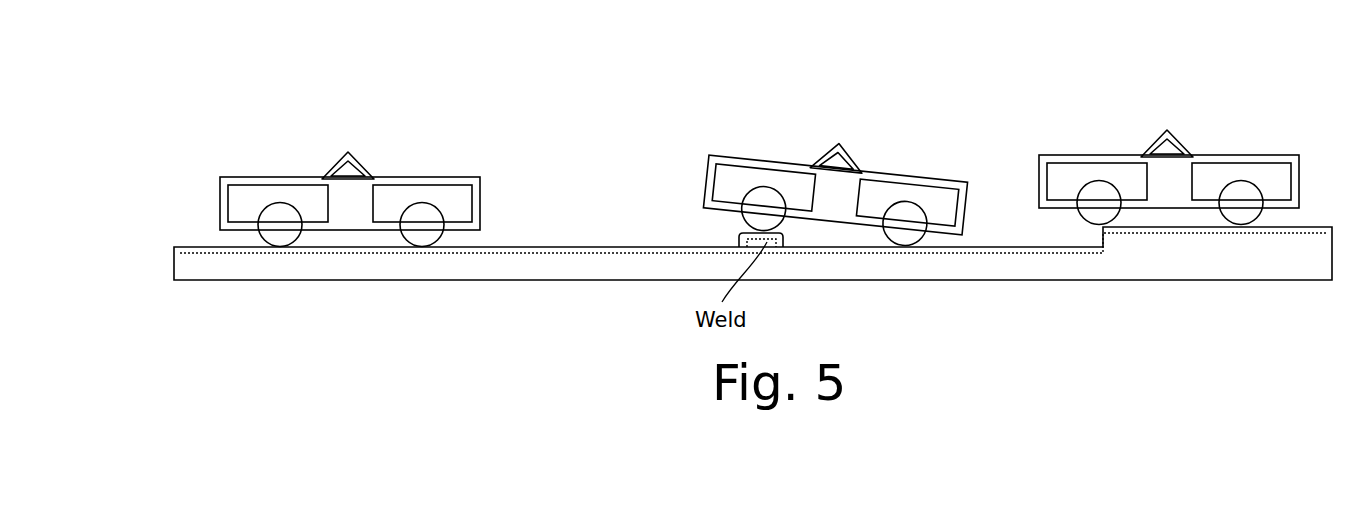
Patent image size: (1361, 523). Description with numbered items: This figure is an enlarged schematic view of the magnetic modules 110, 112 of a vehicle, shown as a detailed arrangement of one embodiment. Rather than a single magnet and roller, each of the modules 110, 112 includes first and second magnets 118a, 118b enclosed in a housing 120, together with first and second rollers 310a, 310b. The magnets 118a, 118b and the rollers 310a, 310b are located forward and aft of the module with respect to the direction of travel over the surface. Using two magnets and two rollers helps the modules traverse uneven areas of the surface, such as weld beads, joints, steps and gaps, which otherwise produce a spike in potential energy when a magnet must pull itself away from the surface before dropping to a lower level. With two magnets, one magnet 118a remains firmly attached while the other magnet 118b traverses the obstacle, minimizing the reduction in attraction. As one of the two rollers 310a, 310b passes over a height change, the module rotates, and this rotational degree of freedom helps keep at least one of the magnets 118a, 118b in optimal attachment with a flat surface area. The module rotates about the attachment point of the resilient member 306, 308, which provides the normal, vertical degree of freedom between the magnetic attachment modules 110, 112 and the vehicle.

The magnetic module 110 is at (732, 149).
The magnetic module 112 is at (732, 149).
The first magnet 118a is at (262, 197).
The second magnet 118b is at (393, 195).
The housing 120 is at (243, 176).
The resilient member 306 is at (630, 114).
The resilient member 308 is at (359, 158).
The first roller 310a is at (257, 238).
The second roller 310b is at (440, 240).